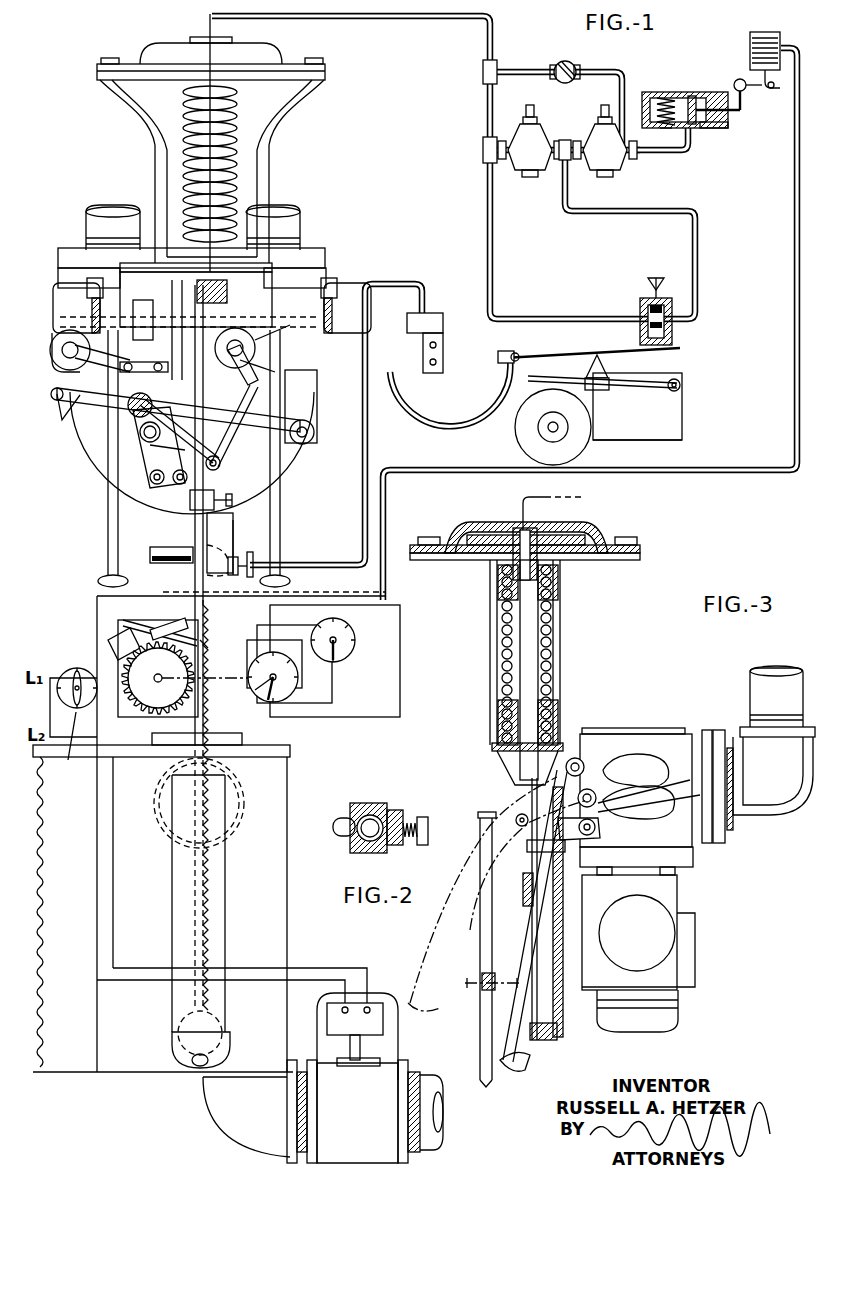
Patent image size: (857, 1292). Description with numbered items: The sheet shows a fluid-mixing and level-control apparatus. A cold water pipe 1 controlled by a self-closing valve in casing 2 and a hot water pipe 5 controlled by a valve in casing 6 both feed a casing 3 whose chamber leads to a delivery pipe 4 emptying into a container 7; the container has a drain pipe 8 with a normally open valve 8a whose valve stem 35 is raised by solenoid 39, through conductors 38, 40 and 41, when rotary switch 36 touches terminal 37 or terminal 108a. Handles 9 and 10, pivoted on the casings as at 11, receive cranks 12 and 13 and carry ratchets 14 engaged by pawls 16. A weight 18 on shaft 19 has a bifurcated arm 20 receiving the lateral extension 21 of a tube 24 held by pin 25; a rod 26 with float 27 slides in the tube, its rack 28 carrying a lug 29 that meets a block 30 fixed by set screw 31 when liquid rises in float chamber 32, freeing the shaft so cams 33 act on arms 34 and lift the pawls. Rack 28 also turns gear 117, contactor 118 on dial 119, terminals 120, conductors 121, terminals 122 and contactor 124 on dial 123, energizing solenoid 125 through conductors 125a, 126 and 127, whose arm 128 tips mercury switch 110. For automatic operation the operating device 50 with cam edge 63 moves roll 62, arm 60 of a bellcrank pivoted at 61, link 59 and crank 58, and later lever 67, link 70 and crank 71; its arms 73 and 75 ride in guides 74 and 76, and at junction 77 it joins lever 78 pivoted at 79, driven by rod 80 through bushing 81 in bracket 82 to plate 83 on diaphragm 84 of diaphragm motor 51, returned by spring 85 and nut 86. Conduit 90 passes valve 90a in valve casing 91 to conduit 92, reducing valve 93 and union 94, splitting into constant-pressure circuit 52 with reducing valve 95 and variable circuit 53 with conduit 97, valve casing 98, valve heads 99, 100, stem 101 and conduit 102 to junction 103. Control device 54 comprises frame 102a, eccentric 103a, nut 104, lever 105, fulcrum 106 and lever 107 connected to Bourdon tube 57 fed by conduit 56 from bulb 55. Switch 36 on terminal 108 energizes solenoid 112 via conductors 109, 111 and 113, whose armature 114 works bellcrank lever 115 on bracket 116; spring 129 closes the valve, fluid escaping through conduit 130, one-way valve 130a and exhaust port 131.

In FIG. 1, the cold water pipe 1 is at (292, 222).
In FIG. 1, the casing 2 is at (306, 341).
In FIG. 3, the casing 2 is at (488, 975).
In FIG. 1, the casing 3 is at (297, 462).
In FIG. 1, the delivery pipe 4 is at (236, 545).
In FIG. 1, the hot water pipe 5 is at (92, 214).
In FIG. 1, the casing 6 is at (70, 331).
In FIG. 1, the container 7 is at (280, 890).
In FIG. 1, the drain pipe 8 is at (436, 1077).
In FIG. 1, the valve 8a is at (333, 1111).
In FIG. 1, the handle 9 is at (282, 549).
In FIG. 1, the handle 10 is at (107, 549).
In FIG. 3, the pivot 11 is at (600, 829).
In FIG. 1, the crank 12 is at (256, 350).
In FIG. 1, the crank 13 is at (60, 350).
In FIG. 1, the ratchet 14 is at (93, 318).
In FIG. 1, the pawl 16 is at (107, 290).
In FIG. 3, the pawl 16 is at (568, 757).
In FIG. 3, the weight 18 is at (665, 772).
In FIG. 3, the shaft 19 is at (605, 783).
In FIG. 3, the arm 20 is at (528, 822).
In FIG. 3, the lateral extension 21 is at (498, 820).
In FIG. 1, the tube 24 is at (194, 396).
In FIG. 2, the tube 24 is at (370, 815).
In FIG. 3, the tube 24 is at (485, 946).
In FIG. 1, the pin 25 is at (272, 325).
In FIG. 1, the rod 26 is at (194, 921).
In FIG. 2, the rod 26 is at (355, 813).
In FIG. 1, the float 27 is at (171, 1040).
In FIG. 1, the rack 28 is at (151, 738).
In FIG. 1, the lug 29 is at (204, 646).
In FIG. 2, the lug 29 is at (334, 825).
In FIG. 1, the block 30 is at (232, 545).
In FIG. 2, the block 30 is at (397, 811).
In FIG. 2, the set screw 31 is at (426, 818).
In FIG. 1, the float chamber 32 is at (171, 858).
In FIG. 3, the cam 33 is at (639, 796).
In FIG. 3, the arm 34 is at (589, 759).
In FIG. 1, the valve stem 35 is at (361, 1047).
In FIG. 1, the rotary switch 36 is at (77, 671).
In FIG. 1, the terminal 37 is at (60, 674).
In FIG. 1, the conductor 38 is at (96, 858).
In FIG. 1, the solenoid 39 is at (373, 1008).
In FIG. 1, the conductor 40 is at (332, 967).
In FIG. 1, the conductor 41 is at (90, 735).
In FIG. 1, the operating device 50 is at (150, 470).
In FIG. 1, the diaphragm motor 51 is at (148, 55).
In FIG. 3, the diaphragm motor 51 is at (470, 527).
In FIG. 1, the source of constant fluid pressure 52 is at (582, 130).
In FIG. 1, the source of variable fluid pressure 53 is at (620, 297).
In FIG. 1, the control device 54 is at (696, 429).
In FIG. 1, the bulb 55 is at (256, 576).
In FIG. 1, the conduit 56 is at (368, 430).
In FIG. 1, the Bourdon tube 57 is at (450, 428).
In FIG. 1, the crank 58 is at (280, 371).
In FIG. 1, the link 59 is at (258, 392).
In FIG. 1, the arm 60 is at (222, 462).
In FIG. 1, the pivot 61 is at (246, 378).
In FIG. 1, the roll 62 is at (190, 478).
In FIG. 1, the cam edge 63 is at (160, 484).
In FIG. 1, the lever 67 is at (150, 440).
In FIG. 1, the link 70 is at (78, 396).
In FIG. 1, the crank 71 is at (51, 393).
In FIG. 1, the upwardly extending arm 73 is at (143, 307).
In FIG. 1, the guide 74 is at (154, 373).
In FIG. 1, the downwardly extending arm 75 is at (160, 553).
In FIG. 1, the guide 76 is at (165, 563).
In FIG. 1, the junction 77 is at (130, 408).
In FIG. 1, the lever 78 is at (302, 418).
In FIG. 1, the pivot 79 is at (315, 433).
In FIG. 1, the reciprocating rod 80 is at (218, 293).
In FIG. 3, the bushing 81 is at (496, 722).
In FIG. 1, the bracket 82 is at (232, 262).
In FIG. 3, the plate 83 is at (580, 528).
In FIG. 3, the diaphragm 84 is at (458, 547).
In FIG. 3, the spring 85 is at (559, 606).
In FIG. 3, the nut 86 is at (550, 570).
In FIG. 1, the conduit 90 is at (657, 94).
In FIG. 1, the valve 90a is at (678, 97).
In FIG. 1, the valve casing 91 is at (696, 92).
In FIG. 1, the conduit 92 is at (682, 160).
In FIG. 1, the pressure reducing valve 93 is at (598, 166).
In FIG. 1, the union 94 is at (564, 138).
In FIG. 1, the reducing valve 95 is at (532, 172).
In FIG. 1, the conduit 97 is at (700, 287).
In FIG. 1, the valve casing 98 is at (674, 339).
In FIG. 1, the valve head 99 is at (657, 292).
In FIG. 1, the valve head 100 is at (640, 328).
In FIG. 1, the valve stem 101 is at (640, 310).
In FIG. 1, the conduit 102 is at (396, 19).
In FIG. 1, the frame 102a is at (684, 410).
In FIG. 1, the junction 103 is at (482, 151).
In FIG. 1, the eccentric 103a is at (522, 441).
In FIG. 1, the nut 104 is at (565, 432).
In FIG. 1, the lever 105 is at (625, 386).
In FIG. 1, the fulcrum 106 is at (609, 367).
In FIG. 1, the lever 107 is at (548, 355).
In FIG. 1, the terminal 108 is at (108, 648).
In FIG. 1, the terminal 108a is at (70, 746).
In FIG. 1, the conductor 109 is at (145, 620).
In FIG. 1, the mercury switch 110 is at (162, 622).
In FIG. 1, the conductor 111 is at (420, 467).
In FIG. 1, the solenoid 112 is at (764, 33).
In FIG. 1, the conductor 113 is at (740, 476).
In FIG. 1, the armature 114 is at (768, 90).
In FIG. 1, the bellcrank lever 115 is at (748, 100).
In FIG. 1, the bracket 116 is at (736, 80).
In FIG. 1, the gear 117 is at (158, 678).
In FIG. 1, the contactor 118 is at (285, 692).
In FIG. 1, the dial 119 is at (268, 703).
In FIG. 1, the terminal 120 is at (300, 690).
In FIG. 1, the conductor 121 is at (340, 688).
In FIG. 1, the terminal 122 is at (356, 636).
In FIG. 1, the dial 123 is at (348, 650).
In FIG. 1, the contactor 124 is at (352, 662).
In FIG. 1, the solenoid 125 is at (118, 650).
In FIG. 1, the conductor 125a is at (400, 608).
In FIG. 1, the conductor 126 is at (222, 716).
In FIG. 1, the conductor 127 is at (154, 679).
In FIG. 1, the arm 128 is at (158, 678).
In FIG. 1, the spring 129 is at (663, 130).
In FIG. 1, the conduit 130 is at (538, 69).
In FIG. 1, the one-way valve 130a is at (600, 53).
In FIG. 1, the exhaust port 131 is at (708, 130).